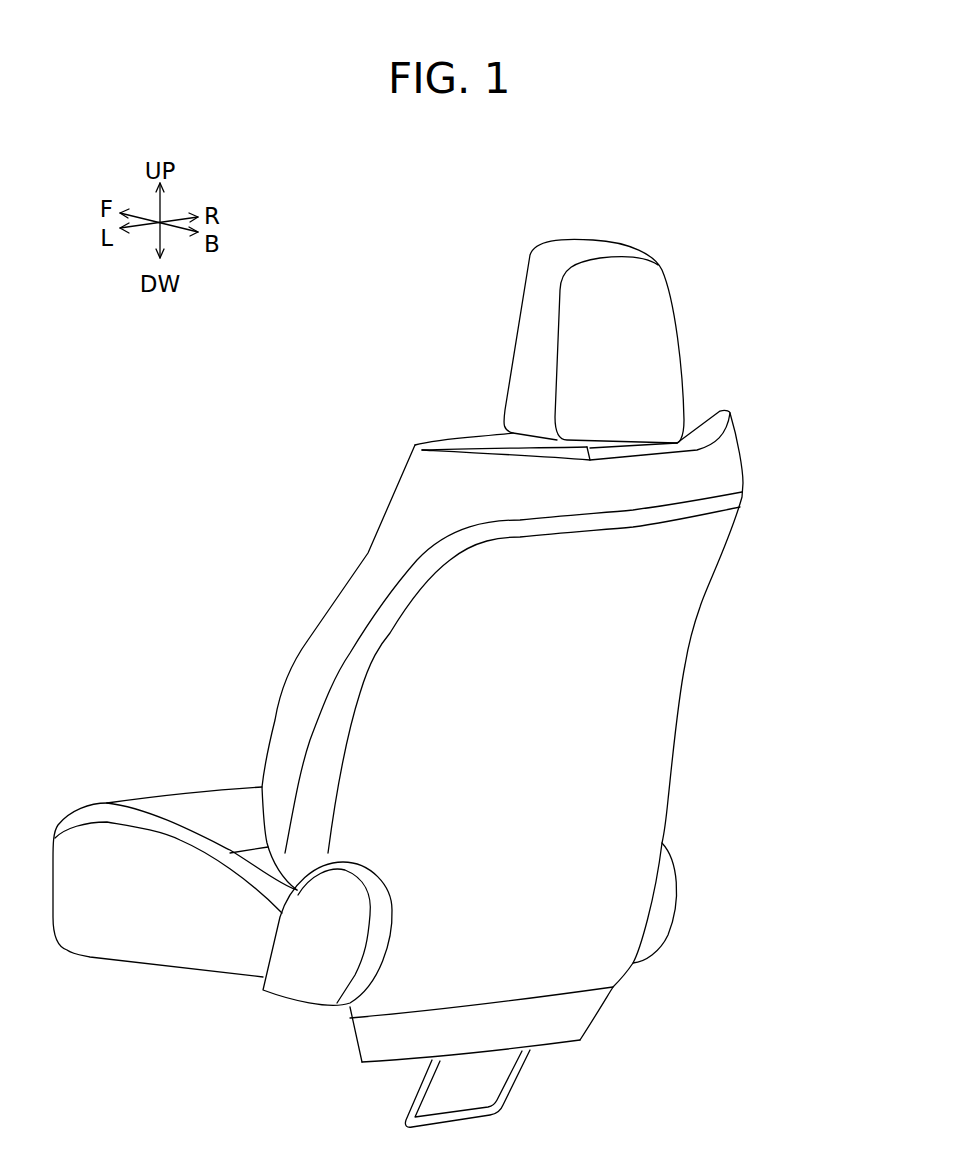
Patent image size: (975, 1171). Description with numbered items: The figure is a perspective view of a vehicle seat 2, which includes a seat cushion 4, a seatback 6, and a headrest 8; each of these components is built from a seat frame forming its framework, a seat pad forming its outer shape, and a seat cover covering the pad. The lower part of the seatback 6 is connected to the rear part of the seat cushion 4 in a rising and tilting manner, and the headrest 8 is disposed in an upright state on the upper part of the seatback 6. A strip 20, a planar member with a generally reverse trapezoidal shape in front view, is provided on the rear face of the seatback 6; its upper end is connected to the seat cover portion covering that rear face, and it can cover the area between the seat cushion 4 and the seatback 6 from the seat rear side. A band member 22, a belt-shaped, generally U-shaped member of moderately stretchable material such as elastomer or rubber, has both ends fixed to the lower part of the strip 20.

The vehicle seat 2 is at (705, 223).
The seat cushion 4 is at (197, 790).
The seatback 6 is at (390, 505).
The headrest 8 is at (513, 323).
The strip 20 is at (567, 1017).
The band member 22 is at (517, 1080).